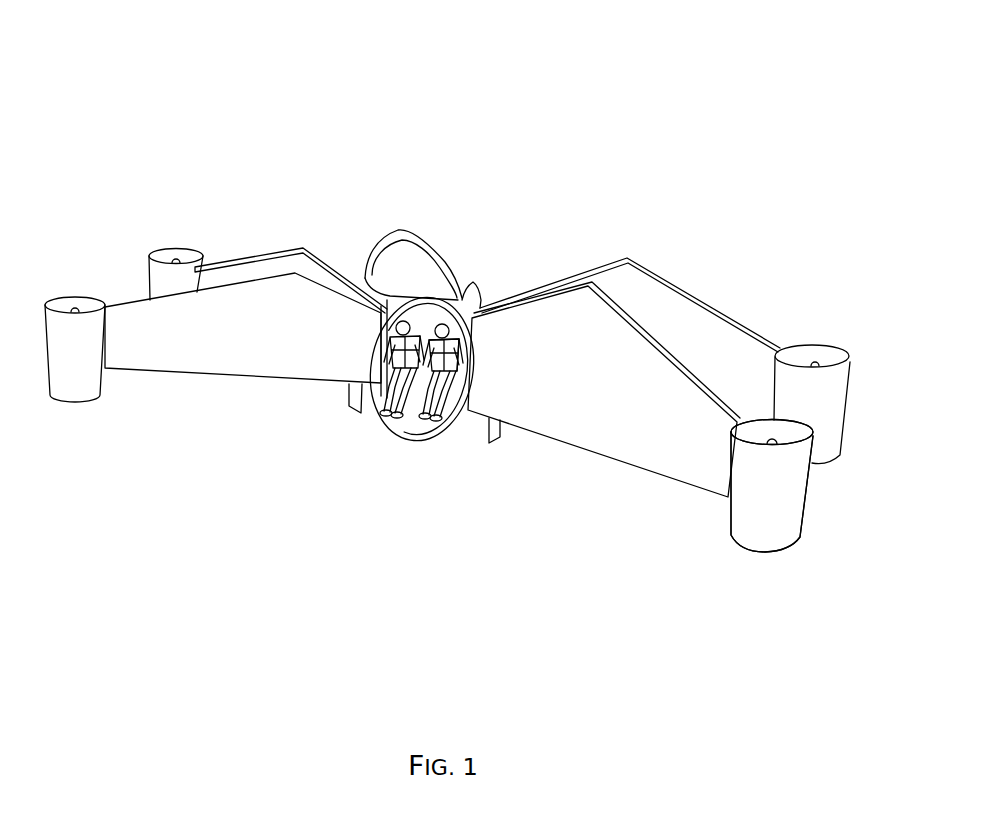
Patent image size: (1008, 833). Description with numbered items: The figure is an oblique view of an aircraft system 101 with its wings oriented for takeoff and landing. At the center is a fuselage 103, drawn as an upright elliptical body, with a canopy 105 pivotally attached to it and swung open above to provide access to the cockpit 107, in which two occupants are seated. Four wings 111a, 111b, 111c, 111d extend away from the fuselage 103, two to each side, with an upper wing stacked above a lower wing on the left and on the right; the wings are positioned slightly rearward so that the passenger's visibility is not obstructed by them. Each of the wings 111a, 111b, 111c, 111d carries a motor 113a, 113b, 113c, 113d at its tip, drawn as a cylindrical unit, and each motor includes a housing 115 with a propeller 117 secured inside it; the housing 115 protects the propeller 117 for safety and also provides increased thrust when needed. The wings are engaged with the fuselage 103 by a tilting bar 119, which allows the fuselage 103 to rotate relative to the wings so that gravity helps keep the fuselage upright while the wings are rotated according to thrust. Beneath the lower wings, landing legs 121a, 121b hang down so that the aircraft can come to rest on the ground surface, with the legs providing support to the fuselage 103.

The aircraft system 101 is at (149, 53).
The fuselage 103 is at (412, 442).
The canopy 105 is at (392, 230).
The cockpit 107 is at (402, 428).
The wing 111a is at (271, 254).
The wing 111b is at (203, 374).
The wing 111c is at (668, 282).
The wing 111d is at (645, 470).
The motor 113a is at (170, 248).
The motor 113b is at (91, 397).
The motor 113c is at (815, 342).
The motor 113d is at (735, 548).
The housing 115 is at (812, 465).
The propeller 117 is at (802, 431).
The tilting bar 119 is at (459, 337).
The landing leg 121a is at (352, 404).
The landing leg 121b is at (492, 442).